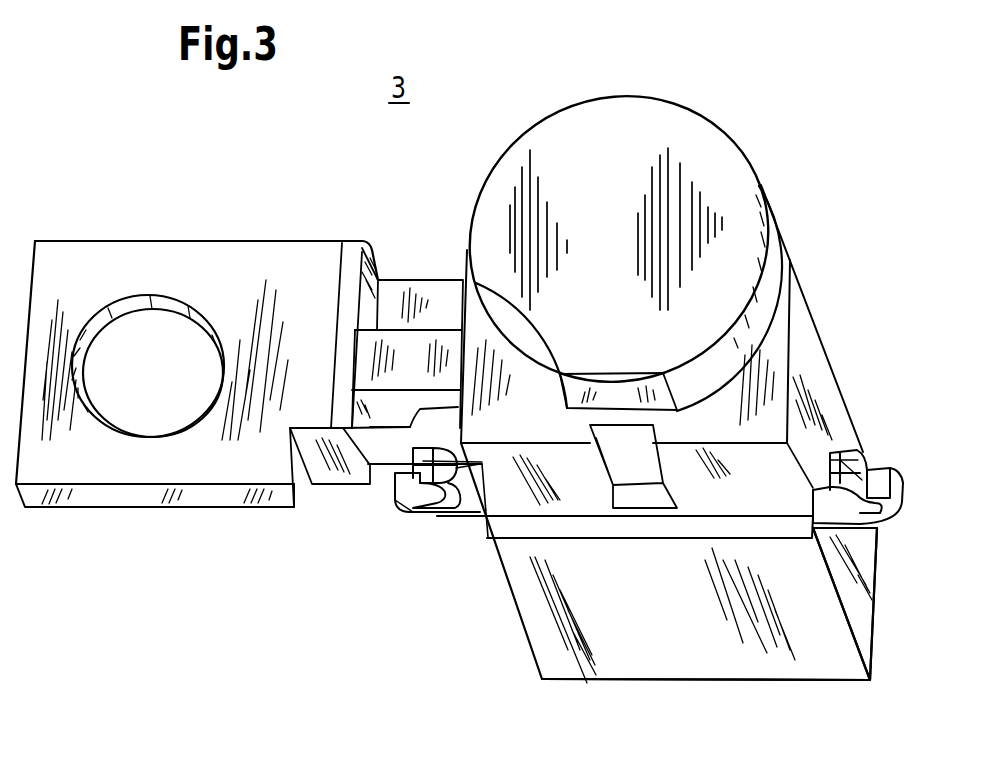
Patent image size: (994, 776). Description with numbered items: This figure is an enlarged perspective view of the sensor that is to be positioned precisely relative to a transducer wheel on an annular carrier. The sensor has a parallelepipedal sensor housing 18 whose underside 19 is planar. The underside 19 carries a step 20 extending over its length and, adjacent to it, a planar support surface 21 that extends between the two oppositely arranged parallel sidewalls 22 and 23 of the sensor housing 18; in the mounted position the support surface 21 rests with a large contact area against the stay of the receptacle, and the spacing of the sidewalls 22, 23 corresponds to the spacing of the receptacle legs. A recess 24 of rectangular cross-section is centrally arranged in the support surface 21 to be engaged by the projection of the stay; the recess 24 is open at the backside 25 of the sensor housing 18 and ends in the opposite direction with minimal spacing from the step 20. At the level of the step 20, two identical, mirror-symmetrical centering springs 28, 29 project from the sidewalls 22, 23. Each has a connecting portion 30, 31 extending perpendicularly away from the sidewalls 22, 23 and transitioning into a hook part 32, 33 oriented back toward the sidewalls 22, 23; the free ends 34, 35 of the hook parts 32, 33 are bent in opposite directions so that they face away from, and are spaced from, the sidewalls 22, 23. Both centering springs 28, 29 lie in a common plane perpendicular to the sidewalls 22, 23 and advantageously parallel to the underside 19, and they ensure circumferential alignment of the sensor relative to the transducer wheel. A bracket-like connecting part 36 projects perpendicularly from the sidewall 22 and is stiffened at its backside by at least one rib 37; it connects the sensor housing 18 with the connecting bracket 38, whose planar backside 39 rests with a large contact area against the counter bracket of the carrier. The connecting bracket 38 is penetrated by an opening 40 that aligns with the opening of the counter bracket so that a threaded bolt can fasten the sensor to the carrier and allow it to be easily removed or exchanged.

The sensor housing 18 is at (693, 645).
The underside 19 is at (610, 648).
The step 20 is at (528, 527).
The support surface 21 is at (520, 483).
The sidewall 22 is at (465, 292).
The sidewall 23 is at (797, 390).
The recess 24 is at (625, 472).
The backside 25 is at (420, 407).
The centering spring 28 is at (408, 518).
The centering spring 29 is at (877, 484).
The connecting portion 30 is at (463, 500).
The connecting portion 31 is at (830, 515).
The hook part 32 is at (410, 500).
The hook part 33 is at (840, 458).
The free end 34 is at (478, 463).
The free end 35 is at (834, 458).
The connecting part 36 is at (420, 320).
The rib 37 is at (407, 377).
The connecting bracket 38 is at (80, 265).
The backside 39 is at (125, 477).
The opening 40 is at (153, 348).